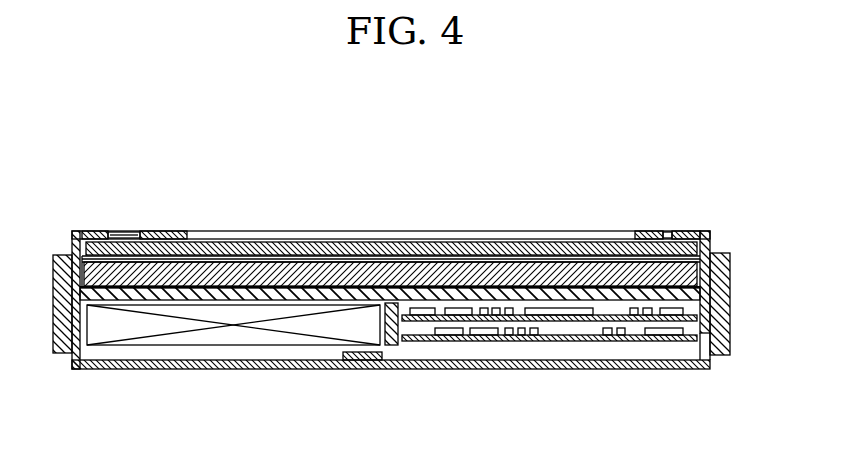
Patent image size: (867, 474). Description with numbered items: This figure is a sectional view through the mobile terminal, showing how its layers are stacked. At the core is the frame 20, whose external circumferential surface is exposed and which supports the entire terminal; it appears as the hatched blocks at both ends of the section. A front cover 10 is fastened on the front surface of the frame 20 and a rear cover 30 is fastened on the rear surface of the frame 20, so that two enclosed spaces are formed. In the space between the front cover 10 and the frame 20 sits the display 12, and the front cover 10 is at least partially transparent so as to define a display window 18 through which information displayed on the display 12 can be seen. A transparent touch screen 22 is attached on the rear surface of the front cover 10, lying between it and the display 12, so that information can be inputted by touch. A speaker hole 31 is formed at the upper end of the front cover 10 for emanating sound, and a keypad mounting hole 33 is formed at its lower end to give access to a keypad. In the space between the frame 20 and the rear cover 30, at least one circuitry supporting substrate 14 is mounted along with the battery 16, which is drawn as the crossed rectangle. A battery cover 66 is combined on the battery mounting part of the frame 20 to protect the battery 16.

The front cover 10 is at (168, 235).
The display 12 is at (465, 272).
The circuitry supporting substrate 14 is at (547, 341).
The battery 16 is at (223, 340).
The display window 18 is at (391, 248).
The frame 20 is at (722, 313).
The transparent touch screen 22 is at (522, 257).
The rear cover 30 is at (612, 369).
The speaker hole 31 is at (666, 236).
The keypad mounting hole 33 is at (129, 233).
The battery cover 66 is at (293, 369).